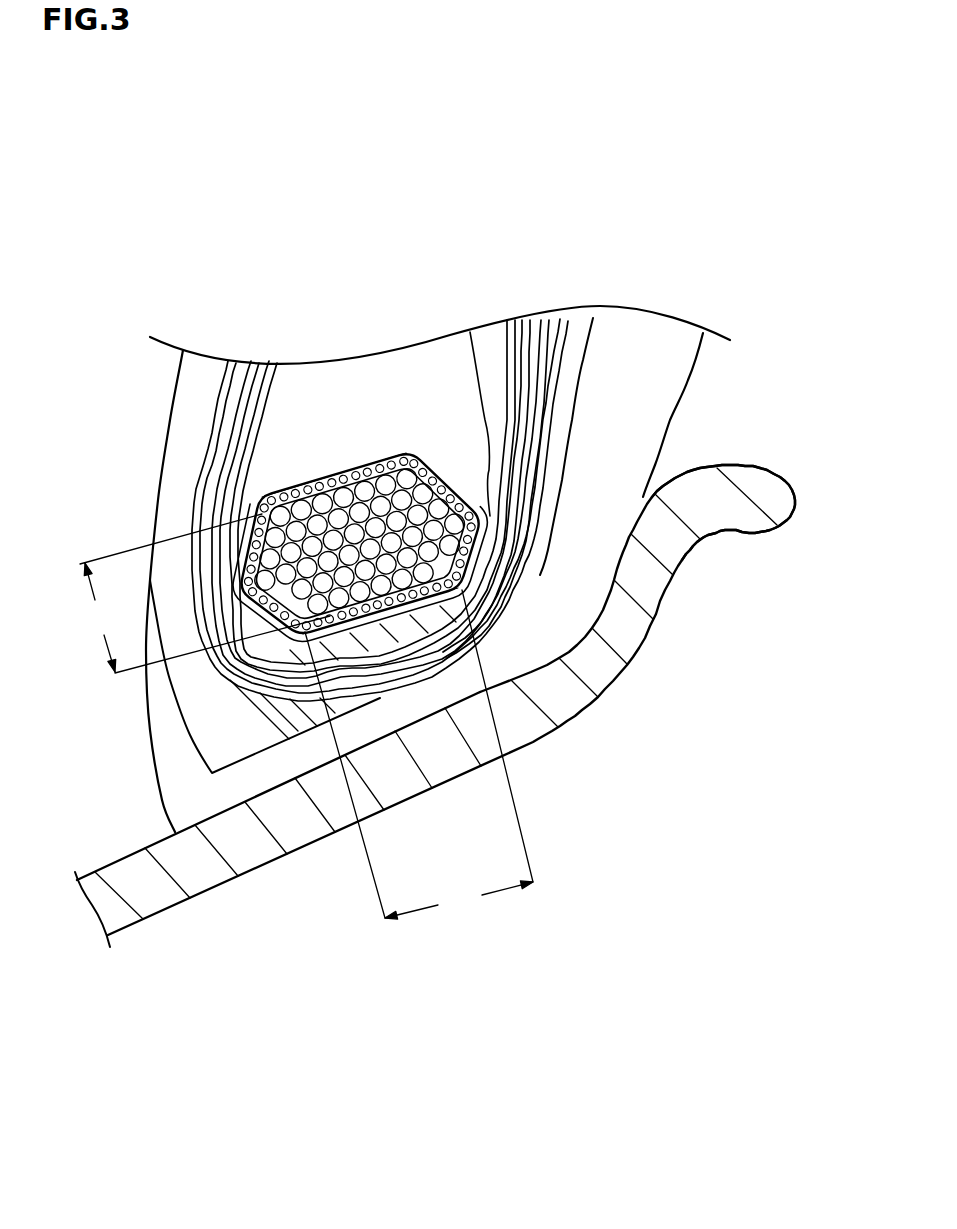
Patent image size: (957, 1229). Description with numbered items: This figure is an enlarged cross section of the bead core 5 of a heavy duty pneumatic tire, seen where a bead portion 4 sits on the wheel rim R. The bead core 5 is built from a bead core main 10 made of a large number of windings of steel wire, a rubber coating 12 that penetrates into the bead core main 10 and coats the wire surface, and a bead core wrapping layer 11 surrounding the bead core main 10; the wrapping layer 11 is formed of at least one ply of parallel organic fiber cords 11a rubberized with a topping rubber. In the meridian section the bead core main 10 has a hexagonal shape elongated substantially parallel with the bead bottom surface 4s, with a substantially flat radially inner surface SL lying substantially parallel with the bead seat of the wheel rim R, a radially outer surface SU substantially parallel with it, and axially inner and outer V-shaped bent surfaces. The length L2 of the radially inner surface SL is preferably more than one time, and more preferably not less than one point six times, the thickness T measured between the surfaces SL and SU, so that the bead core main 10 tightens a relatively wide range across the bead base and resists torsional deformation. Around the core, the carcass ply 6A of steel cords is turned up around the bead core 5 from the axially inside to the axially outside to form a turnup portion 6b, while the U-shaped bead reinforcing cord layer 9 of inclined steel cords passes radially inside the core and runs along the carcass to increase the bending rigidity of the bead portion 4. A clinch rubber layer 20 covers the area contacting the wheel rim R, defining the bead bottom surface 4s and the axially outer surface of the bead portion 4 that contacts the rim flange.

The bead portion 4 is at (740, 352).
The bead bottom surface 4s is at (235, 806).
The bead core 5 is at (368, 530).
The carcass ply 6A is at (222, 388).
The turnup portion 6b is at (490, 533).
The bead reinforcing cord layer 9 is at (552, 335).
The bead core main 10 is at (390, 485).
The bead core wrapping layer 11 is at (440, 465).
The organic fiber cords 11a is at (330, 478).
The rubber coating 12 is at (300, 445).
The clinch rubber layer 20 is at (648, 372).
The radially outer surface SU is at (293, 487).
The radially inner surface SL is at (447, 593).
The thickness of the bead core main T is at (205, 593).
The length of the radially inner surface L2 is at (419, 754).
The wheel rim R is at (155, 890).